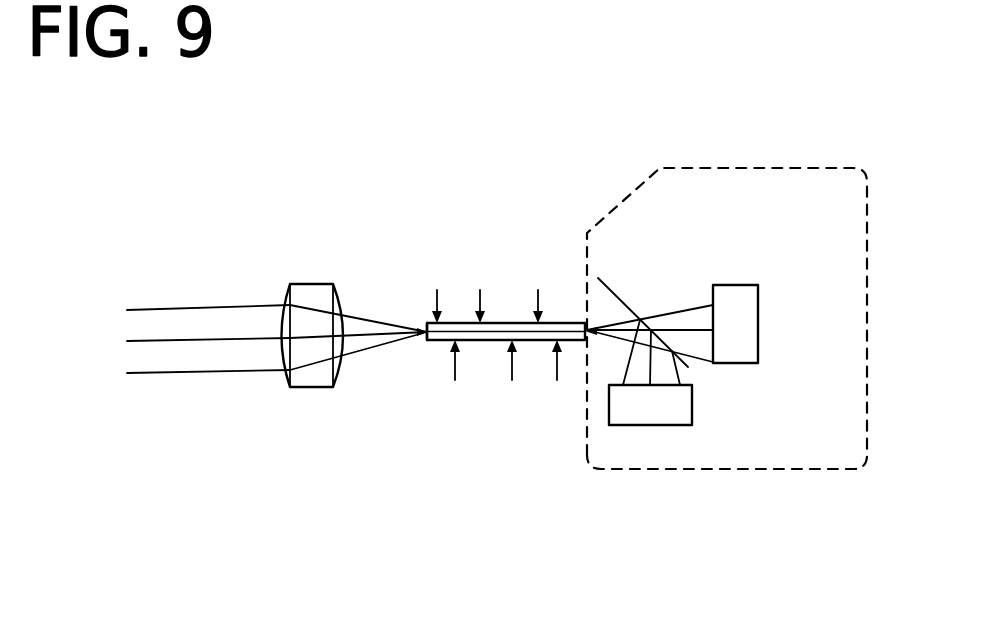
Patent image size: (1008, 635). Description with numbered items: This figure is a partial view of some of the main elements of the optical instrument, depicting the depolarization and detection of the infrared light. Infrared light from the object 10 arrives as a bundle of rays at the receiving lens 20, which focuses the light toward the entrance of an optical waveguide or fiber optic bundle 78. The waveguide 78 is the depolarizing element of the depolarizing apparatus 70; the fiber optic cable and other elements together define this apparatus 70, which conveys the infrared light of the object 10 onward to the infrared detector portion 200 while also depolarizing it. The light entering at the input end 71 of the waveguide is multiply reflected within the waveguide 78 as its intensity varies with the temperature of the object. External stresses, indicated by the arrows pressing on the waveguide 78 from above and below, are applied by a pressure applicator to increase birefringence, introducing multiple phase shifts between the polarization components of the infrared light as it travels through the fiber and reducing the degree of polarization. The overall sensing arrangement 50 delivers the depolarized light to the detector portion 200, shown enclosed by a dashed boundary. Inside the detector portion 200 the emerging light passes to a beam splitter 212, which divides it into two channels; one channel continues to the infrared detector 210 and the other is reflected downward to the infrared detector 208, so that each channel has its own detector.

The object 10 is at (170, 339).
The receiving lens 20 is at (355, 308).
The depolarizing apparatus 70 is at (507, 285).
The fiber input end 71 is at (421, 342).
The optical waveguide 78 is at (507, 316).
The fiber optic sensing system 50 is at (474, 469).
The infrared detector portion 200 is at (727, 298).
The beam splitter 212 is at (628, 289).
The infrared detector 210 is at (776, 324).
The infrared detector 208 is at (650, 426).